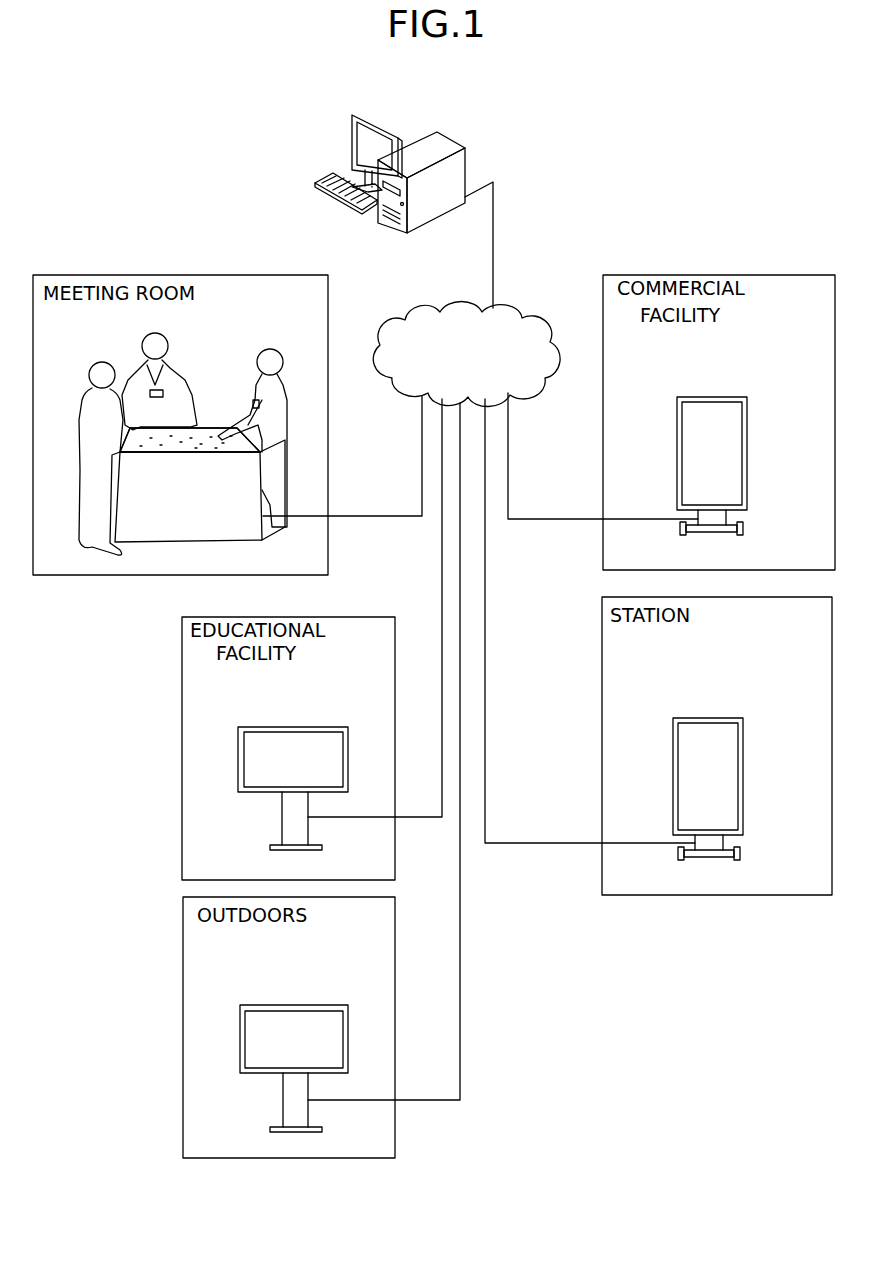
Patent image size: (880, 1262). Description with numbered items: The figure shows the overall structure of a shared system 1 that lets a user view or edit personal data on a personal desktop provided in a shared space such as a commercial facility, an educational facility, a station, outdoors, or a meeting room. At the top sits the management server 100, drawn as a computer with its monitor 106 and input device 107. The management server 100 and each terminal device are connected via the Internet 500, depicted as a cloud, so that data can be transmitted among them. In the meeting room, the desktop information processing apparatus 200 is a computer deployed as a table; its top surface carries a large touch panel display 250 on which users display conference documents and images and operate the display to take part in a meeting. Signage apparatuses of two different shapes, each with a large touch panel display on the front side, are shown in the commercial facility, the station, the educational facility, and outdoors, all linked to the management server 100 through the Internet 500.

The shared system 1 is at (684, 92).
The management server 100 is at (442, 112).
The monitor 106 is at (360, 139).
The input device 107 is at (338, 201).
The desktop information processing apparatus 200 is at (213, 412).
The touch panel display 250 is at (153, 440).
The Internet 500 is at (517, 313).